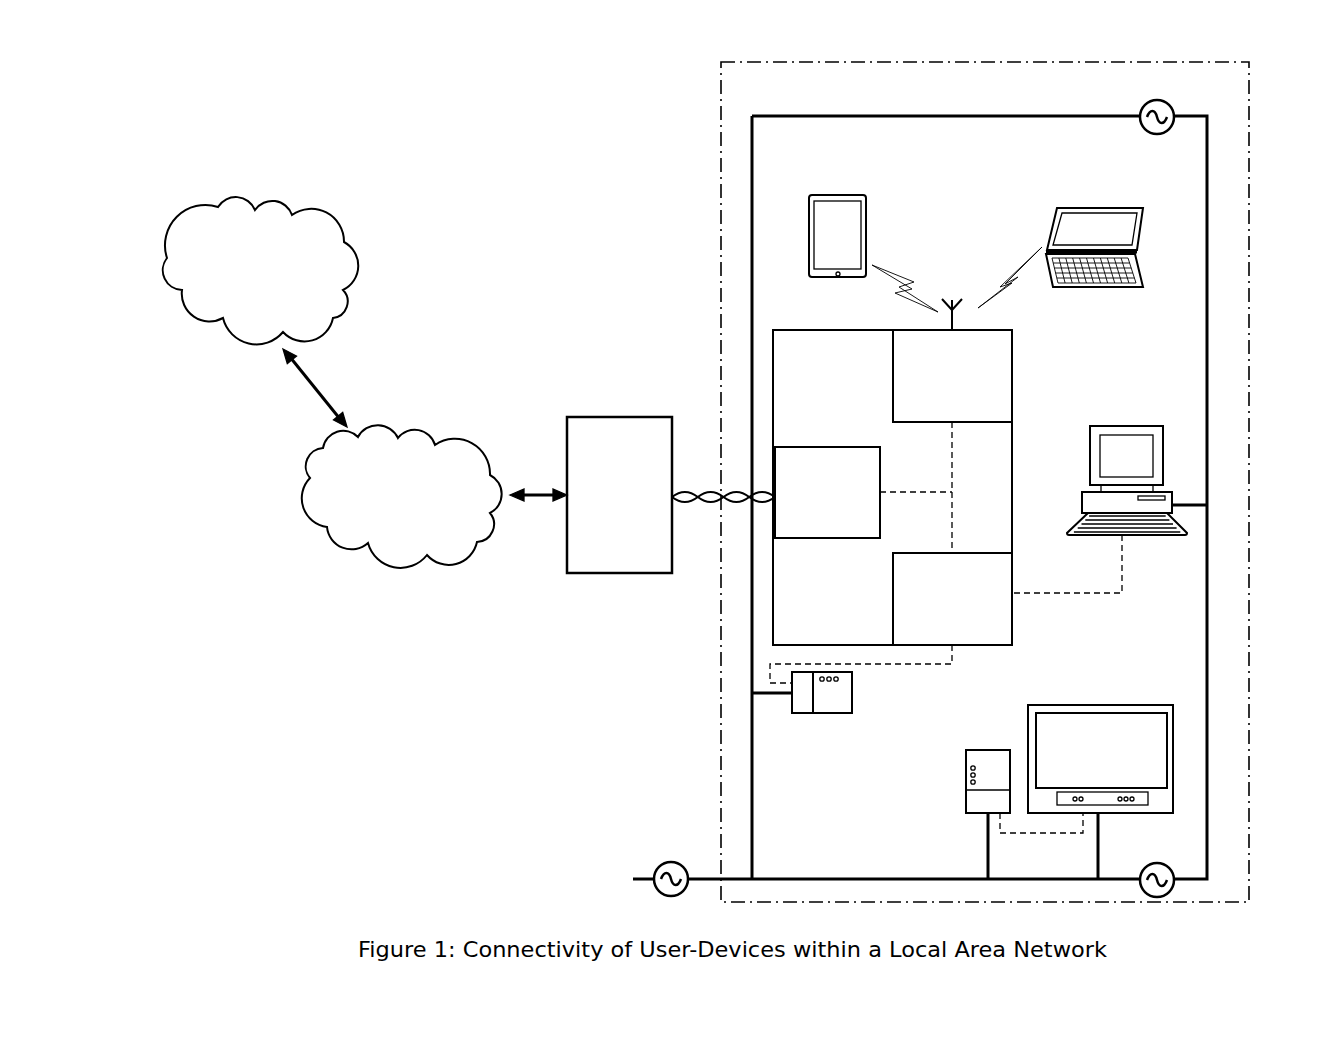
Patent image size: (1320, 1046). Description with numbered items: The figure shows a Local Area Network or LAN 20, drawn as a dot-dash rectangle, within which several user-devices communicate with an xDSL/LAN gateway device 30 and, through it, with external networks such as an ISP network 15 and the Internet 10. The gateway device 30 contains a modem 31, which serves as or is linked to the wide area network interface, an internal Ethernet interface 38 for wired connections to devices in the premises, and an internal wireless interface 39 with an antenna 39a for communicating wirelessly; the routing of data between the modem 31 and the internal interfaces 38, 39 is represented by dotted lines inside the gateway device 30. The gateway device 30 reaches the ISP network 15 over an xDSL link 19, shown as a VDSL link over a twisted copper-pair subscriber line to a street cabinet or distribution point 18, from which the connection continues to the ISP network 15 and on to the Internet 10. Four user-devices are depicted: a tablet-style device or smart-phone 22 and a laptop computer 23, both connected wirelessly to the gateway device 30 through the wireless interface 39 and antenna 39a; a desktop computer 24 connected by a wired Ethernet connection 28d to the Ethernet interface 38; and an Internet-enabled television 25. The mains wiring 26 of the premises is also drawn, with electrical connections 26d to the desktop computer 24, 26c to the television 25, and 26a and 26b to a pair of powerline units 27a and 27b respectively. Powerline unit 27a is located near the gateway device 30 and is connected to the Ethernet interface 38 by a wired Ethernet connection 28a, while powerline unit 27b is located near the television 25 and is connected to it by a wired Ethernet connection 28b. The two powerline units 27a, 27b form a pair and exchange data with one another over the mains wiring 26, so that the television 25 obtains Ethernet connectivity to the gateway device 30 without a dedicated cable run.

The Internet 10 is at (222, 333).
The ISP network 15 is at (415, 425).
The cabinet (or DP etc.) 18 is at (613, 417).
The xDSL link 19 is at (712, 493).
The local area network 20 is at (721, 82).
The tablet-style wireless-enabled computing device or mobile smart-phone 22 is at (832, 195).
The wireless-enabled laptop computer 23 is at (1078, 207).
The desktop computer 24 is at (1123, 425).
The Internet-enabled television 25 is at (1122, 704).
The mains wiring 26 is at (748, 840).
The electrical connection 26a is at (782, 695).
The electrical connection 26b is at (987, 860).
The electrical connection 26c is at (1103, 860).
The electrical connection 26d is at (1193, 500).
The powerline unit 27a is at (835, 714).
The powerline unit 27b is at (988, 750).
The wired/Ethernet connection 28a is at (903, 668).
The wired/Ethernet connection 28b is at (1042, 833).
The wired/Ethernet connection 28d is at (1078, 595).
The xDSL/LAN gateway device 30 is at (815, 330).
The modem 31 is at (832, 447).
The Ethernet interface 38 is at (893, 627).
The wireless interface 39 is at (893, 378).
The antenna 39a is at (946, 298).